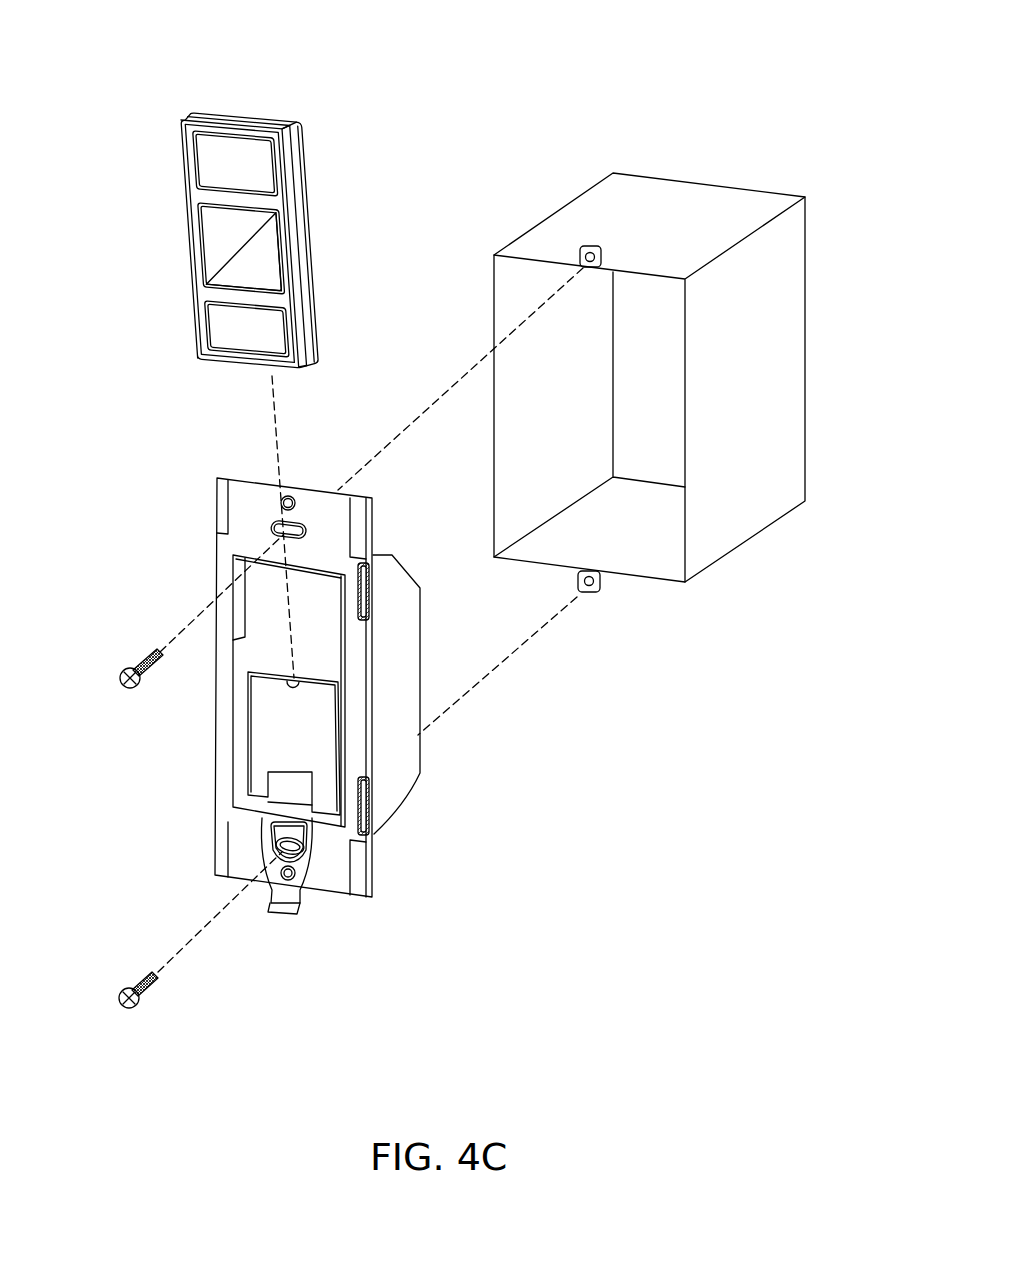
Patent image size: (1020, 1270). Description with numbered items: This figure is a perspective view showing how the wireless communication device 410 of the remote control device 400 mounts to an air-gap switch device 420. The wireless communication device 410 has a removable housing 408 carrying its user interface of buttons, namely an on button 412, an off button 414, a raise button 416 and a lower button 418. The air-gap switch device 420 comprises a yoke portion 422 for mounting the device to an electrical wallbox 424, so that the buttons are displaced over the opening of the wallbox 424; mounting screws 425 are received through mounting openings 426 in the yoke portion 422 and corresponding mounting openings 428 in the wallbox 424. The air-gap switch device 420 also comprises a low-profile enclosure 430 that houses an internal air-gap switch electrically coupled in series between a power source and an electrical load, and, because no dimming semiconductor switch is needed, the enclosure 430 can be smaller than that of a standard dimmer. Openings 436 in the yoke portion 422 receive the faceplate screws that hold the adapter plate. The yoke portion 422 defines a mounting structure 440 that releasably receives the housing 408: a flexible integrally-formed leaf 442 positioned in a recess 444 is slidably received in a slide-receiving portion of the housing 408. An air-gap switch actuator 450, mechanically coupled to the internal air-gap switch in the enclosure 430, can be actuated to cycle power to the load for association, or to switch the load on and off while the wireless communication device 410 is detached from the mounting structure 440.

The remote control device 400 is at (581, 76).
The removable housing 408 is at (199, 312).
The wireless communication device 410 is at (351, 168).
The on button 412 is at (243, 158).
The off button 414 is at (262, 332).
The raise button 416 is at (216, 218).
The lower button 418 is at (261, 266).
The air-gap switch device 420 is at (412, 886).
The yoke portion 422 is at (250, 508).
The electrical wallbox 424 is at (673, 218).
The mounting screws 425 is at (143, 655).
The mounting openings 426 is at (272, 528).
The mounting openings 428 is at (585, 246).
The enclosure 430 is at (393, 763).
The openings 436 is at (291, 498).
The mounting structure 440 is at (270, 731).
The flexible integrally-formed leaf 442 is at (318, 748).
The recess 444 is at (300, 588).
The air-gap switch actuator 450 is at (284, 913).